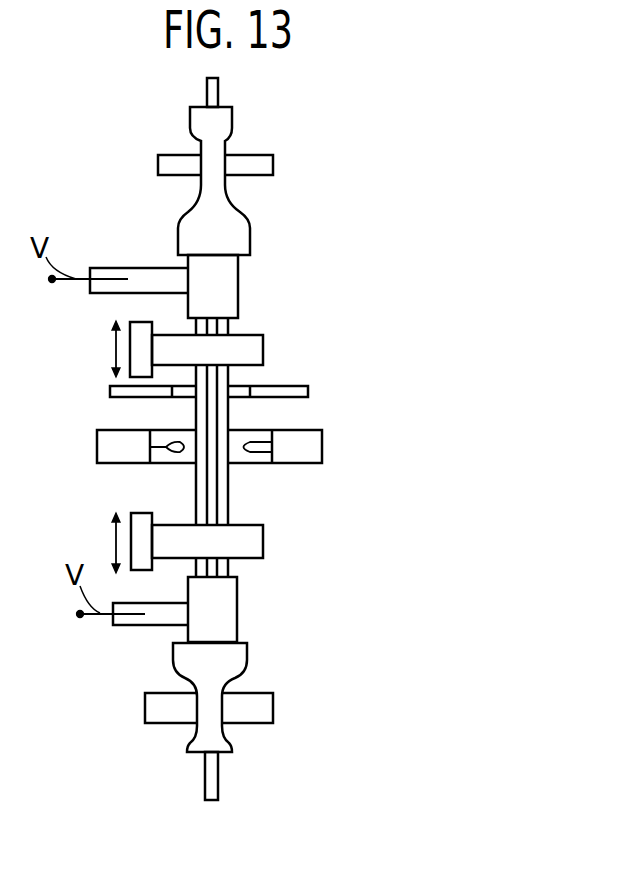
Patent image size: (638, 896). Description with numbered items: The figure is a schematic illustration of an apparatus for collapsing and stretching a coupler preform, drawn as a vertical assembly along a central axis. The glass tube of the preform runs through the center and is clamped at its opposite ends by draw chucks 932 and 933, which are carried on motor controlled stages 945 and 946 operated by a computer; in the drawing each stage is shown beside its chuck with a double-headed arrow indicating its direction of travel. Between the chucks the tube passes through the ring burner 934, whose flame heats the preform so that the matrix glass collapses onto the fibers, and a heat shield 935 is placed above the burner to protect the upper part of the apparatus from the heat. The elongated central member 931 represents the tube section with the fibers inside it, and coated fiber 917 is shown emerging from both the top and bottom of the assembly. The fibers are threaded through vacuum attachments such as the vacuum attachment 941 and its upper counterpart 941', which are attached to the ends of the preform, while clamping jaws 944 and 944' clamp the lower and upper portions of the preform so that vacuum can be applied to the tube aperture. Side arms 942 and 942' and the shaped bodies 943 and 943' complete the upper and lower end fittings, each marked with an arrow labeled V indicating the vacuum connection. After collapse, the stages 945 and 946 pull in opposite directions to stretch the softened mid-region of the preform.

The coated fiber 917 is at (222, 92).
The spindle 931 is at (236, 497).
The draw chuck 932 is at (271, 350).
The draw chuck 933 is at (263, 540).
The ring burner 934 is at (300, 430).
The heat shield 935 is at (290, 386).
The vacuum attachment 941 is at (259, 609).
The upper cylinder 941' is at (268, 286).
The lower feed arm 942 is at (130, 637).
The upper feed arm 942' is at (139, 248).
The lower coupling body 943 is at (265, 697).
The upper coupling body 943' is at (274, 181).
The clamping jaw 944 is at (224, 709).
The clamping jaw 944' is at (230, 164).
The motor controlled stage 945 is at (135, 322).
The motor controlled stage 946 is at (135, 513).